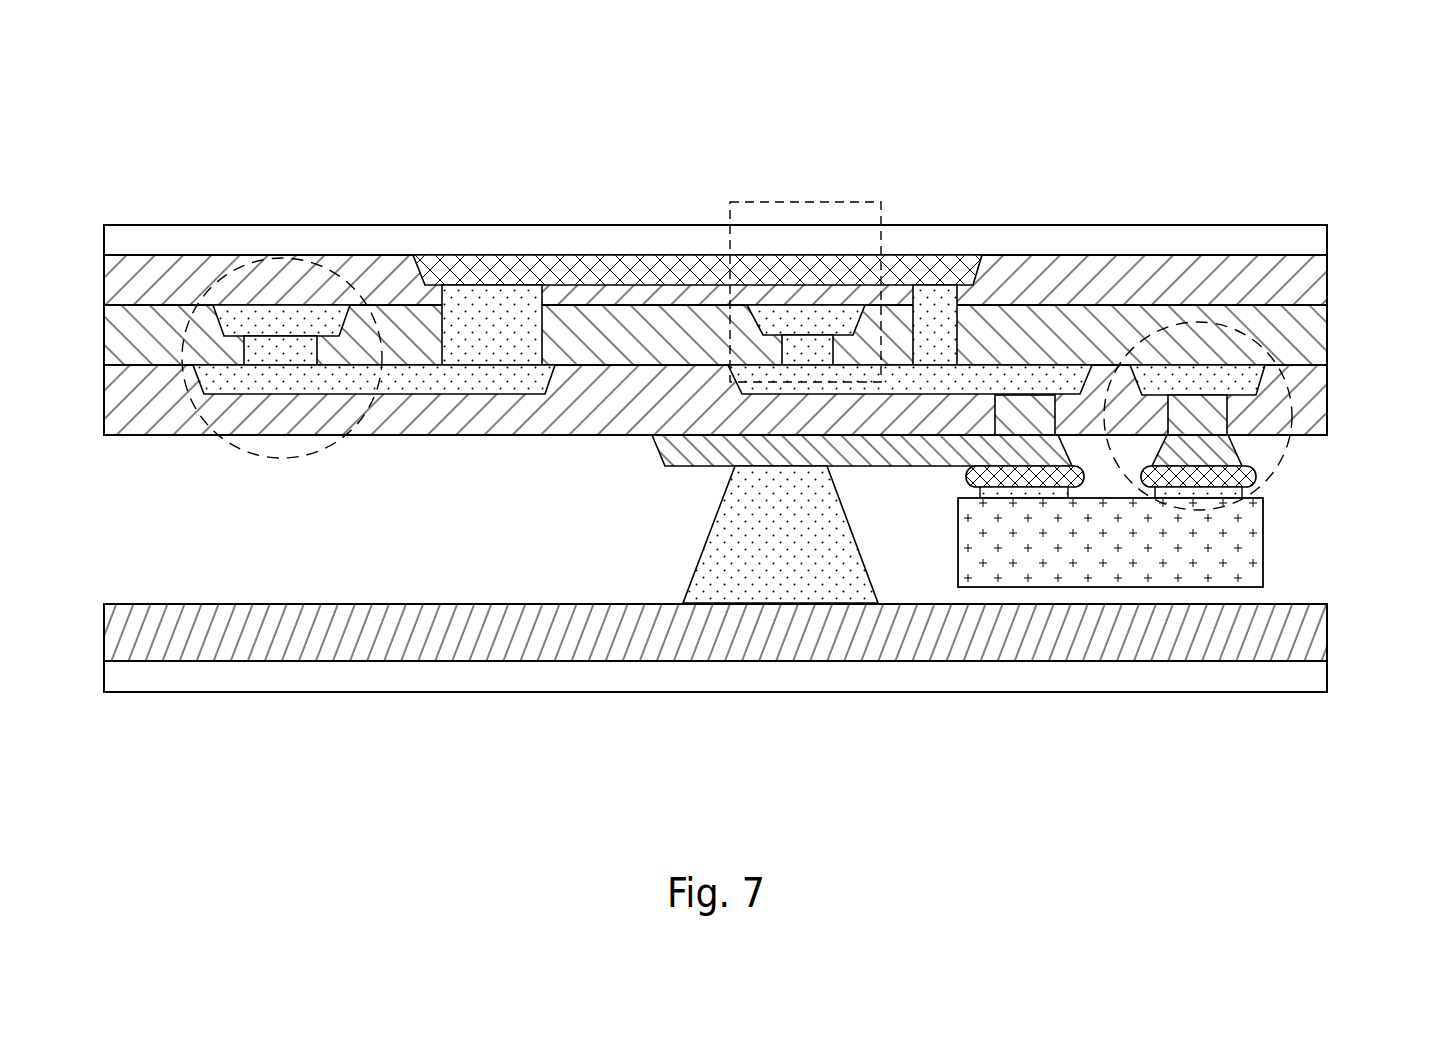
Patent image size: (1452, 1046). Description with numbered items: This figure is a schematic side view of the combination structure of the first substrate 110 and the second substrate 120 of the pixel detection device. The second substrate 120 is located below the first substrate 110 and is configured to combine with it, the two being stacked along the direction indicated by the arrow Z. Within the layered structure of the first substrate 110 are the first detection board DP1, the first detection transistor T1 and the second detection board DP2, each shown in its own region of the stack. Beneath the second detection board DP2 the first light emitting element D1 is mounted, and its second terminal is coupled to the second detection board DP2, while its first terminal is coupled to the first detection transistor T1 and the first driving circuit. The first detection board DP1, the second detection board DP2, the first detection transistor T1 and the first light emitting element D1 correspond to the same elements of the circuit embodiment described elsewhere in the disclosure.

The first substrate 110 is at (1327, 239).
The second substrate 120 is at (1327, 634).
The first light emitting element D1 is at (1263, 543).
The first detection board DP1 is at (283, 258).
The second detection board DP2 is at (1190, 323).
The first detection transistor T1 is at (813, 202).
The Z direction Z is at (109, 79).